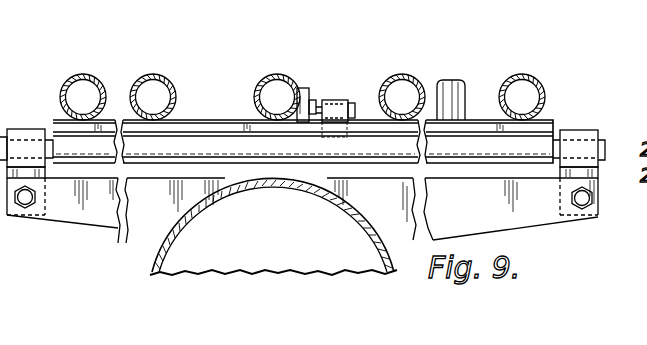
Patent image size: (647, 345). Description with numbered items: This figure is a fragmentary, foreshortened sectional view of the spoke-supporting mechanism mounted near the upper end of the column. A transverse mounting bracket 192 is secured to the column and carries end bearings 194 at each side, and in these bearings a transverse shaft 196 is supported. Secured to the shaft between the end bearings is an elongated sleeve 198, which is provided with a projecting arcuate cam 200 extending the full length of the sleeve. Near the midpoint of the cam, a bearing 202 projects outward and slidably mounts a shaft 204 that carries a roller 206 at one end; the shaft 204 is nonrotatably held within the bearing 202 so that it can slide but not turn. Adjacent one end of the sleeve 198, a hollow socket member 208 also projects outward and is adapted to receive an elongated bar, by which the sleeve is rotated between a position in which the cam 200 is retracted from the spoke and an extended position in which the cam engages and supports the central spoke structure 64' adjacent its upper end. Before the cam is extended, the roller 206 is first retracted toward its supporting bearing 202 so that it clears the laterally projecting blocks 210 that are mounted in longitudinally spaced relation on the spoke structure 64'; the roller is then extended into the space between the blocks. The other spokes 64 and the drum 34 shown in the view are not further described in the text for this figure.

The drum 34 is at (280, 181).
The pipe 64 is at (118, 72).
The central spoke structure 64' is at (276, 71).
The transverse mounting bracket 192 is at (140, 238).
The end bearings 194 is at (28, 128).
The transverse shaft 196 is at (606, 142).
The elongated sleeve 198 is at (220, 140).
The arcuate cam 200 is at (183, 120).
The bearing 202 is at (344, 93).
The shaft 204 is at (354, 103).
The roller 206 is at (313, 100).
The hollow socket member 208 is at (458, 82).
The laterally projecting blocks 210 is at (298, 88).